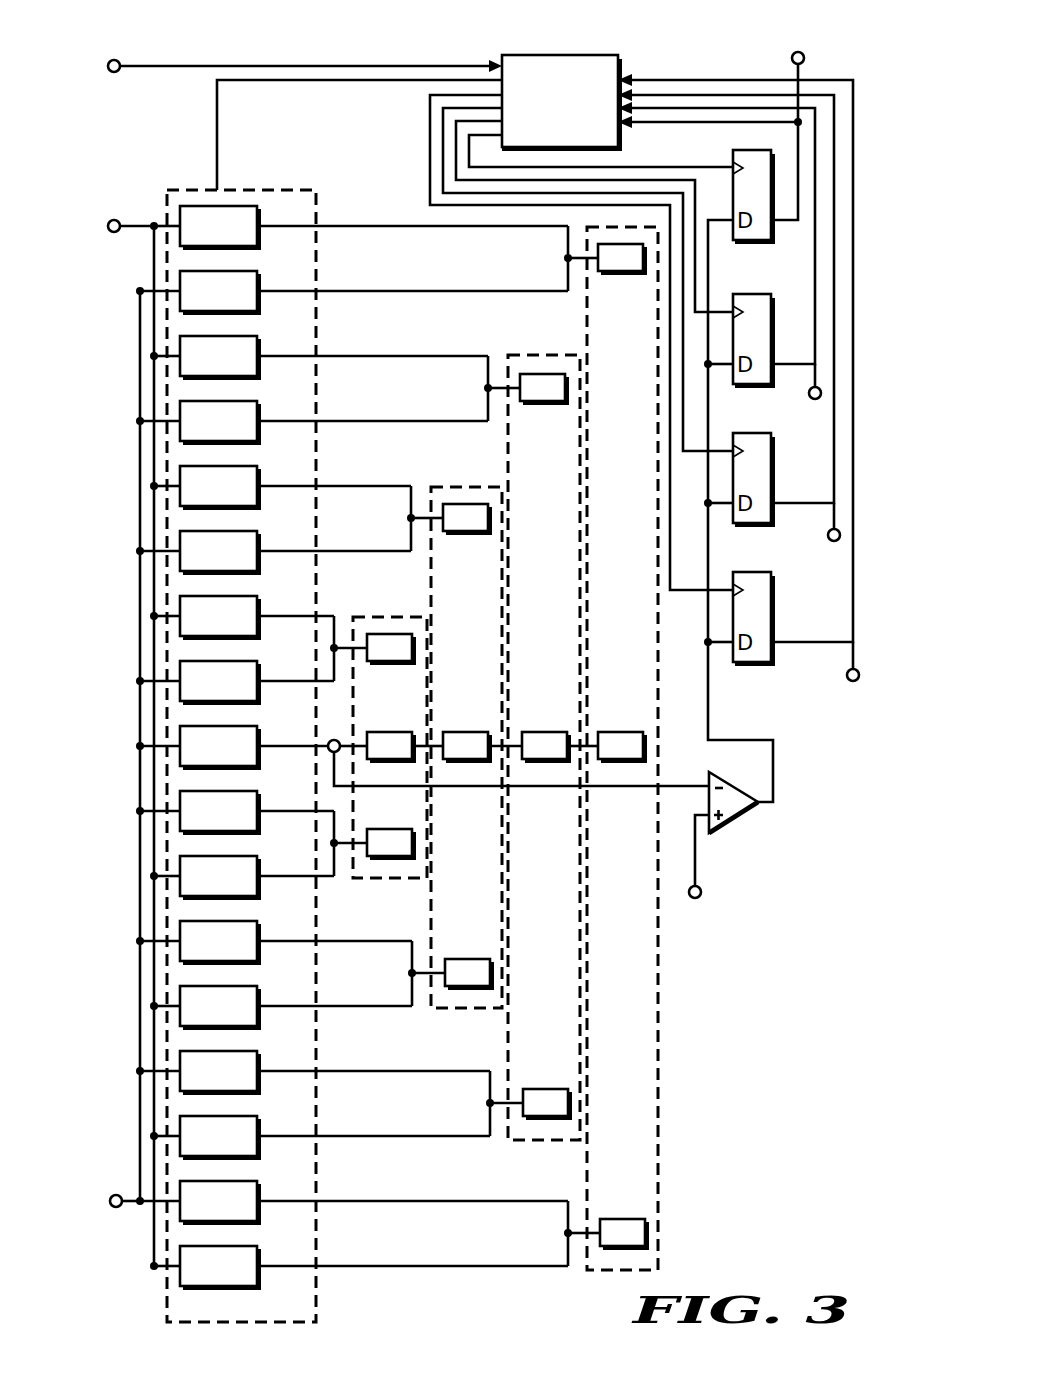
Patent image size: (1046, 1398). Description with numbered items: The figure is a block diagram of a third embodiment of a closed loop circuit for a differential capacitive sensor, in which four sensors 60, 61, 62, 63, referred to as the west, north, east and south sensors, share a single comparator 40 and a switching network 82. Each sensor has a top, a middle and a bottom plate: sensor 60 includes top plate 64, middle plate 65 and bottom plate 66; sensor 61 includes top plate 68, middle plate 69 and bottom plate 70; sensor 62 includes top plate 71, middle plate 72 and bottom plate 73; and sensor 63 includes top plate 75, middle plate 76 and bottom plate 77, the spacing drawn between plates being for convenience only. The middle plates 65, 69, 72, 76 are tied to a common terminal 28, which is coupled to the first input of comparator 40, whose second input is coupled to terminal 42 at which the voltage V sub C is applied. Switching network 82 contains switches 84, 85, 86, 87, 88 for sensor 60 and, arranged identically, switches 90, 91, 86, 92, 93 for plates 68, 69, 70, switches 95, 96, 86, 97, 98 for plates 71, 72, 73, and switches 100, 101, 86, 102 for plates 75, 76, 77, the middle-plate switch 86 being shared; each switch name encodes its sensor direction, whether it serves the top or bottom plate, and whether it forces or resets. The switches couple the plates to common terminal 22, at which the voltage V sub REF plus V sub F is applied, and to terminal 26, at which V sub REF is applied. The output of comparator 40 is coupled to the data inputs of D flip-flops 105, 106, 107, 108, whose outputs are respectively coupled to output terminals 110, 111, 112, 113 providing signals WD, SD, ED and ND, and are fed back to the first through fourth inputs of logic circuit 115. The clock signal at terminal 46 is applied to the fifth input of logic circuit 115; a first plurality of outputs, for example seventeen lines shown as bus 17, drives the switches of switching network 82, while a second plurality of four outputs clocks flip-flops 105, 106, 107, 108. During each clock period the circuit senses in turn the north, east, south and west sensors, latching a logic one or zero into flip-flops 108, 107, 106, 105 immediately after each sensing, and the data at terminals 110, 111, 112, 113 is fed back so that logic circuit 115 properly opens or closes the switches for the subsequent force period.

The first plurality of outputs 17 is at (224, 118).
The common terminal 22 is at (112, 232).
The terminal 26 is at (114, 1207).
The terminal 28 is at (515, 750).
The comparator 40 is at (742, 822).
The terminal 42 is at (697, 898).
The terminal 46 is at (115, 60).
The west sensor 60 is at (375, 617).
The north sensor 61 is at (455, 487).
The east sensor 62 is at (533, 355).
The south sensor 63 is at (658, 1063).
The top plate 64 is at (392, 665).
The middle plate 65 is at (392, 732).
The bottom plate 66 is at (392, 829).
The top plate 68 is at (470, 535).
The middle plate 69 is at (465, 732).
The bottom plate 70 is at (467, 959).
The top plate 71 is at (545, 405).
The middle plate 72 is at (545, 732).
The bottom plate 73 is at (545, 1089).
The top plate 75 is at (621, 275).
The middle plate 76 is at (620, 732).
The bottom plate 77 is at (620, 1219).
The switching network 82 is at (277, 190).
The switch 84 is at (258, 638).
The switch 85 is at (258, 703).
The switch 86 is at (258, 768).
The switch 87 is at (258, 833).
The switch 88 is at (258, 898).
The switch 90 is at (258, 508).
The switch 91 is at (258, 573).
The switch 92 is at (258, 963).
The switch 93 is at (258, 1028).
The switch 95 is at (258, 378).
The switch 96 is at (258, 443).
The switch 97 is at (258, 1093).
The switch 98 is at (258, 1158).
The switch 100 is at (258, 248).
The switch 101 is at (258, 313).
The switch 102 is at (258, 1223).
The D flip-flop 105 is at (752, 244).
The D flip-flop 106 is at (752, 388).
The D flip-flop 107 is at (752, 527).
The D flip-flop 108 is at (752, 666).
The output terminal 110 is at (804, 56).
The output terminal 111 is at (809, 395).
The output terminal 112 is at (828, 537).
The output terminal 113 is at (847, 677).
The logic circuit 115 is at (600, 55).